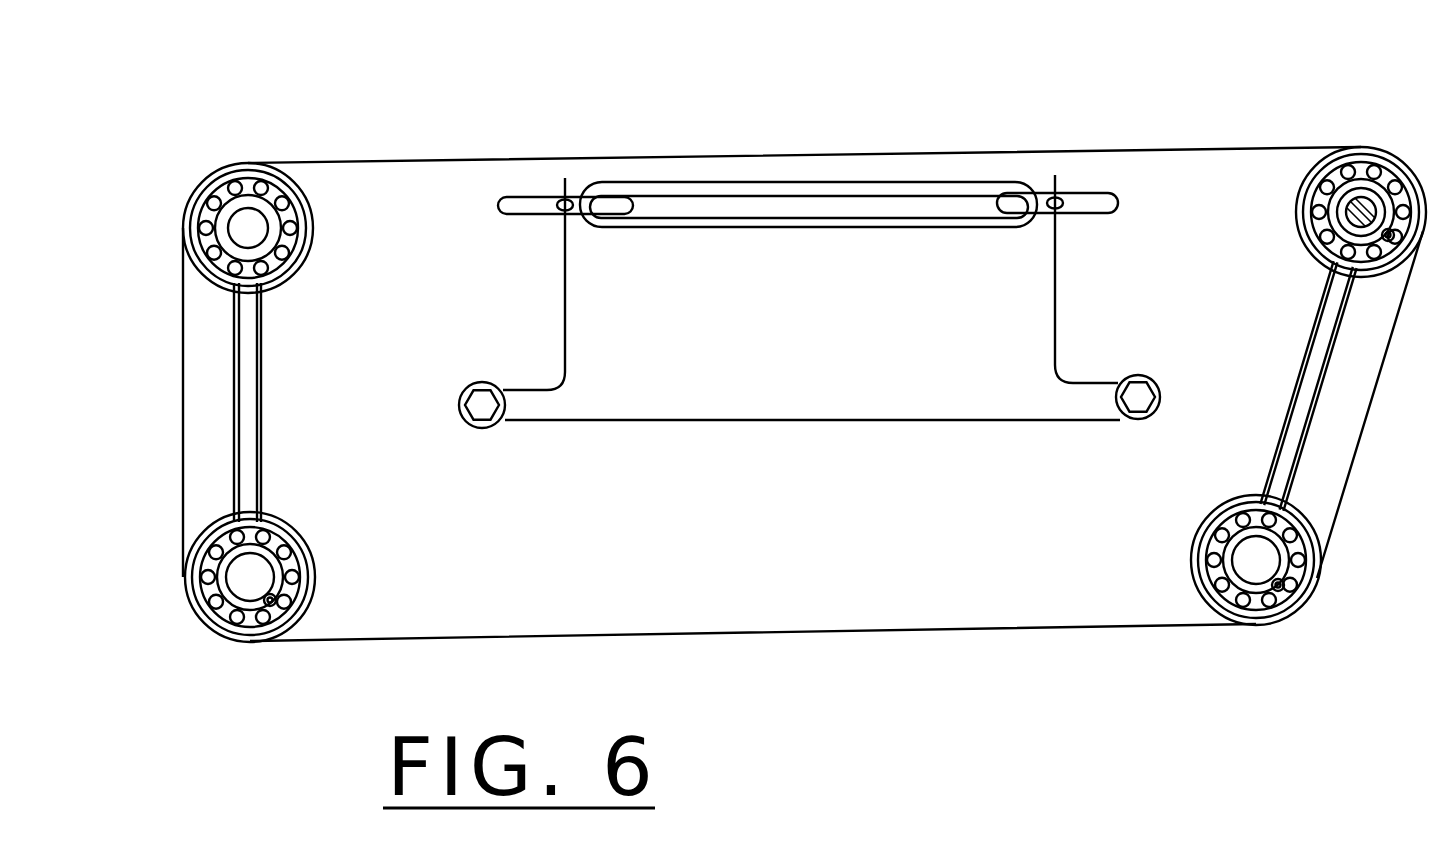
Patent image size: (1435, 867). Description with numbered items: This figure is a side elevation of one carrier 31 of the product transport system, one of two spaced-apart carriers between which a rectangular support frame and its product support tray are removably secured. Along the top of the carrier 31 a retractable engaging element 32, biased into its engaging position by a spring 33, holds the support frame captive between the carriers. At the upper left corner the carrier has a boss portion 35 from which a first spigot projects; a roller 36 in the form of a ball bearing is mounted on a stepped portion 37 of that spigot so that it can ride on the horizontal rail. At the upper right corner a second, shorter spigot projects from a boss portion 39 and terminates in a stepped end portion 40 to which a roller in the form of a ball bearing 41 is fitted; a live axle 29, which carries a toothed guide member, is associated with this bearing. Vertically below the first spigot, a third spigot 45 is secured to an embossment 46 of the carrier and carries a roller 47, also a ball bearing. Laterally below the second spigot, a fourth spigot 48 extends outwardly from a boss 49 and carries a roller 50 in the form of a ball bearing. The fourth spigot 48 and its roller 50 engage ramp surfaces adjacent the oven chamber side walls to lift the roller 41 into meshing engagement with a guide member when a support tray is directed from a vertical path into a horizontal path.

The live axle 29 is at (1253, 81).
The carrier 31 is at (500, 142).
The retractable engaging element 32 is at (808, 146).
The spring 33 is at (1052, 258).
The boss portion 35 is at (315, 245).
The roller 36 is at (302, 187).
The stepped portion 37 is at (253, 234).
The boss portion 39 is at (1310, 165).
The stepped end portion 40 is at (1340, 213).
The ball bearing 41 is at (1305, 206).
The third spigot 45 is at (252, 577).
The embossment 46 is at (300, 522).
The roller 47 is at (303, 588).
The fourth spigot 48 is at (1258, 560).
The boss 49 is at (1210, 507).
The roller 50 is at (1308, 580).